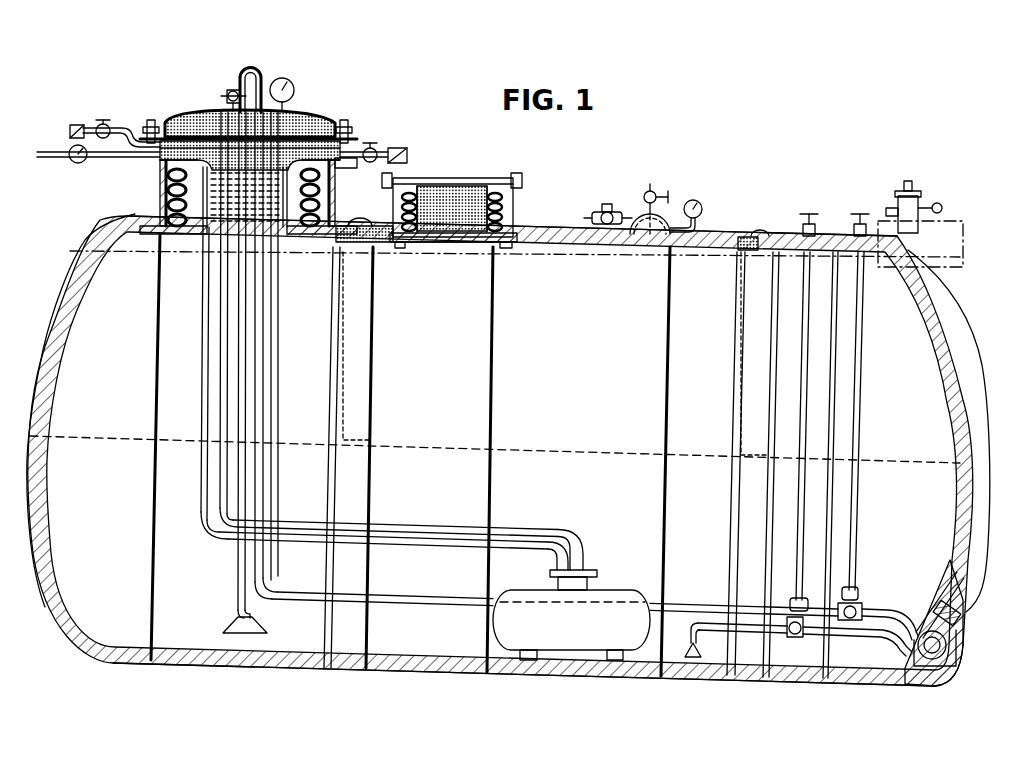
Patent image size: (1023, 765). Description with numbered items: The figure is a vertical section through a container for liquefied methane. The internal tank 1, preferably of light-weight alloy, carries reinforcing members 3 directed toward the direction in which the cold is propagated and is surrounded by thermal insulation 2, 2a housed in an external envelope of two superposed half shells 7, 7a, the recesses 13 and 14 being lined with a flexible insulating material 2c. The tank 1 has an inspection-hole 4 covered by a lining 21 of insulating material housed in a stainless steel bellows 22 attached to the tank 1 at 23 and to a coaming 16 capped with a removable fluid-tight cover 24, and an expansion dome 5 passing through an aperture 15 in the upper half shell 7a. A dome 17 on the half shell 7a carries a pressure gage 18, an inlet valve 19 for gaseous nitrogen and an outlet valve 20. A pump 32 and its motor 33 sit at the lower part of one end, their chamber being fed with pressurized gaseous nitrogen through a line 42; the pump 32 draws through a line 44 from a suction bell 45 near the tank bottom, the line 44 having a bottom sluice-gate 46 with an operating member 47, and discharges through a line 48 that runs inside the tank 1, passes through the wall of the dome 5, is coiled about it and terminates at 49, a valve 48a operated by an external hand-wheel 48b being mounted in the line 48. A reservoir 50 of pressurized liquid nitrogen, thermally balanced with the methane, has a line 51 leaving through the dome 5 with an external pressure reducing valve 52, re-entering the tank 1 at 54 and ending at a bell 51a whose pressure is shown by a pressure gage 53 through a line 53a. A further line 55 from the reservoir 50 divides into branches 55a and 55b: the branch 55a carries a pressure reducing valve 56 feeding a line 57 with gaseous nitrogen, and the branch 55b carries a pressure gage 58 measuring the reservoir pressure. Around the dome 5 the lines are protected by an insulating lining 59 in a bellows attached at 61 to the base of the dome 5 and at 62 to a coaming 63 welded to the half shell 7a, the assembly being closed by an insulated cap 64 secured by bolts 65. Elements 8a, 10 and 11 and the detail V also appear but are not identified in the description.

The internal tank 1 is at (575, 247).
The thermal insulation 2 is at (46, 518).
The thermal insulation 2a is at (78, 290).
The flexible insulating material 2c is at (338, 275).
The reinforcing members 3 is at (335, 478).
The inspection-hole 4 is at (445, 243).
The expansion dome 5 is at (205, 122).
The lower half shell 7 is at (196, 661).
The upper half shell 7a is at (560, 233).
The internal passage 8a is at (345, 334).
The conduit 10 is at (735, 252).
The cover 11 is at (362, 222).
The recess 13 is at (392, 242).
The recess 14 is at (709, 250).
The aperture 15 is at (172, 226).
The coaming 16 is at (505, 215).
The dome 17 is at (656, 216).
The pressure gage 18 is at (694, 200).
The inlet valve 19 is at (644, 197).
The outlet valve 20 is at (600, 211).
The lining 21 is at (465, 180).
The stainless steel bellows 22 is at (502, 200).
The bellows attachment point 23 is at (490, 240).
The removable fluid-tight cover 24 is at (440, 184).
The motor 33 is at (918, 650).
The pump 32 is at (932, 645).
The line 42 is at (966, 584).
The line 44 is at (745, 626).
The suction bell 45 is at (690, 650).
The check-valve or bottom sluice-gate 46 is at (789, 614).
The operating member 47 is at (806, 355).
The discharge line 48 is at (372, 149).
The valve 48a is at (857, 599).
The external hand-wheel 48b is at (860, 220).
The discharge line termination 49 is at (406, 152).
The reservoir 50 is at (600, 600).
The line 51 is at (239, 80).
The bell 51a is at (241, 623).
The pressure reducing valve 52 is at (229, 92).
The pressure gage 53 is at (279, 80).
The line 53a is at (280, 381).
The re-entry point 54 is at (221, 122).
The line 55 is at (400, 542).
The branch 55a is at (134, 128).
The branch 55b is at (126, 159).
The pressure reducing valve 56 is at (101, 124).
The line 57 is at (70, 128).
The pressure gage 58 is at (76, 163).
The lining 59 is at (309, 130).
The bellows attachment point 61 is at (204, 230).
The bellows attachment point 62 is at (344, 165).
The coaming 63 is at (161, 180).
The cap 64 is at (298, 120).
The bolts 65 is at (152, 119).
The valve detail V is at (950, 223).